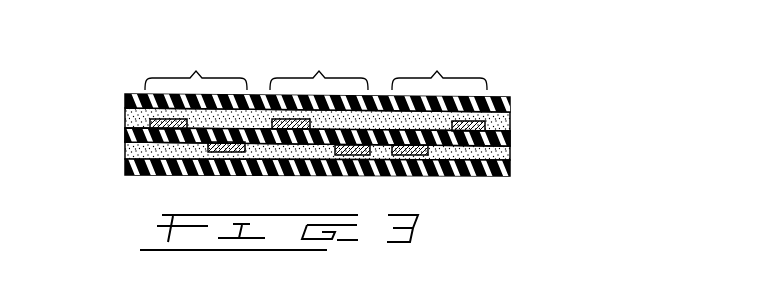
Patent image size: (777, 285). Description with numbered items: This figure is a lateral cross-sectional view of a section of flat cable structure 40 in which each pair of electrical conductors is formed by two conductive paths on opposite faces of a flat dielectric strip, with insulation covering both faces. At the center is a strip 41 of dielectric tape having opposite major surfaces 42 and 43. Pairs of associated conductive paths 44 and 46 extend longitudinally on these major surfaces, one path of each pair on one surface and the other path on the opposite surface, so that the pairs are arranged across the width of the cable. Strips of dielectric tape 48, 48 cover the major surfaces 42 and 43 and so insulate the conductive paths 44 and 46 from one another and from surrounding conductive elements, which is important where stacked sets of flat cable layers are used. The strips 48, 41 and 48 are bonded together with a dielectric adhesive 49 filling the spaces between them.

The flat cable structure 40 is at (574, 108).
The strip of dielectric tape 41 is at (512, 135).
The major surface 42 is at (373, 128).
The major surface 43 is at (150, 138).
The conductive path 44 is at (150, 124).
The conductive path 46 is at (338, 153).
The strip of dielectric tape 48 is at (498, 100).
The dielectric adhesive 49 is at (508, 120).